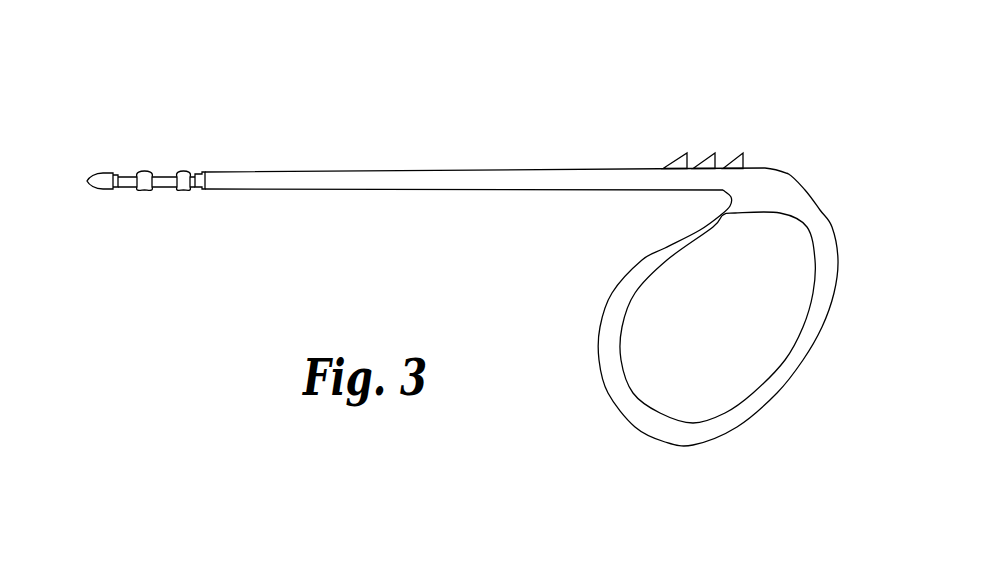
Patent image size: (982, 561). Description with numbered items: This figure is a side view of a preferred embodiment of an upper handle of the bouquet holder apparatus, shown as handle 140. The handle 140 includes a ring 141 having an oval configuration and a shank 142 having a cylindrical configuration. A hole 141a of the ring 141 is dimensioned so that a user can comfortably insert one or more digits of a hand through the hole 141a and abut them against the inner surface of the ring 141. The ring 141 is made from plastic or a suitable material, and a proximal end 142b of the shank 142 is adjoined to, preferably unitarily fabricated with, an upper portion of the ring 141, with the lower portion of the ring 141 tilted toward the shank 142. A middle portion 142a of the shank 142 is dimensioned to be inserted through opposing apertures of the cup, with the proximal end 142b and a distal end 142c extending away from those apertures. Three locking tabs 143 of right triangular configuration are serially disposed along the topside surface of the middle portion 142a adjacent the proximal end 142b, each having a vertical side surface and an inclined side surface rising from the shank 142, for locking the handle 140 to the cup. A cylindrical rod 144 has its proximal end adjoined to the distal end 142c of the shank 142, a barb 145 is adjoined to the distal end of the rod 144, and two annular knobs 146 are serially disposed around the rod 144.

The handle 140 is at (594, 78).
The ring 141 is at (796, 410).
The hole 141a is at (697, 322).
The shank 142 is at (389, 158).
The middle portion 142a is at (408, 178).
The proximal end 142b is at (798, 190).
The distal end 142c is at (201, 170).
The locking tabs 143 is at (696, 152).
The rod 144 is at (164, 198).
The barb 145 is at (90, 170).
The knobs 146 is at (181, 172).